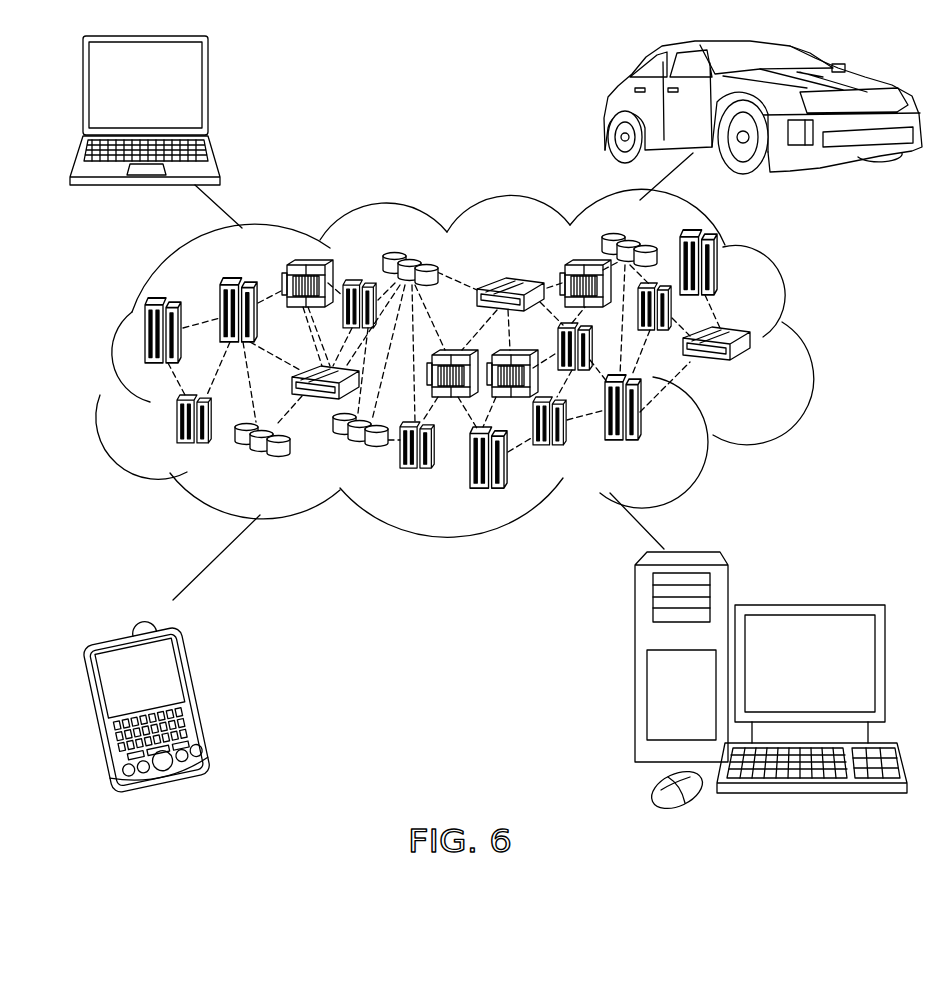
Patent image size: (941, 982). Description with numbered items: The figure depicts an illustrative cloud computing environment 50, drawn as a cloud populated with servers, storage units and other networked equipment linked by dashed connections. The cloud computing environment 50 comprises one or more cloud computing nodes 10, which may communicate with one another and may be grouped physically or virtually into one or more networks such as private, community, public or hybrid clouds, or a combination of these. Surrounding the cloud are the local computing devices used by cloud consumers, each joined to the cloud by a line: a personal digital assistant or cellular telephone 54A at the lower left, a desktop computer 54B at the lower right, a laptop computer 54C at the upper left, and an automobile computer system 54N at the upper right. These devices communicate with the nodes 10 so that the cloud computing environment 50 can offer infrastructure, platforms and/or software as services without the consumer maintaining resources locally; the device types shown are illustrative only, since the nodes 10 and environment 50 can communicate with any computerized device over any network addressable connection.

The cloud computing node 10 is at (760, 371).
The cloud computing environment 50 is at (806, 340).
The personal digital assistant or cellular telephone 54A is at (200, 688).
The desktop computer 54B is at (807, 603).
The laptop computer 54C is at (208, 91).
The automobile computer system 54N is at (612, 106).